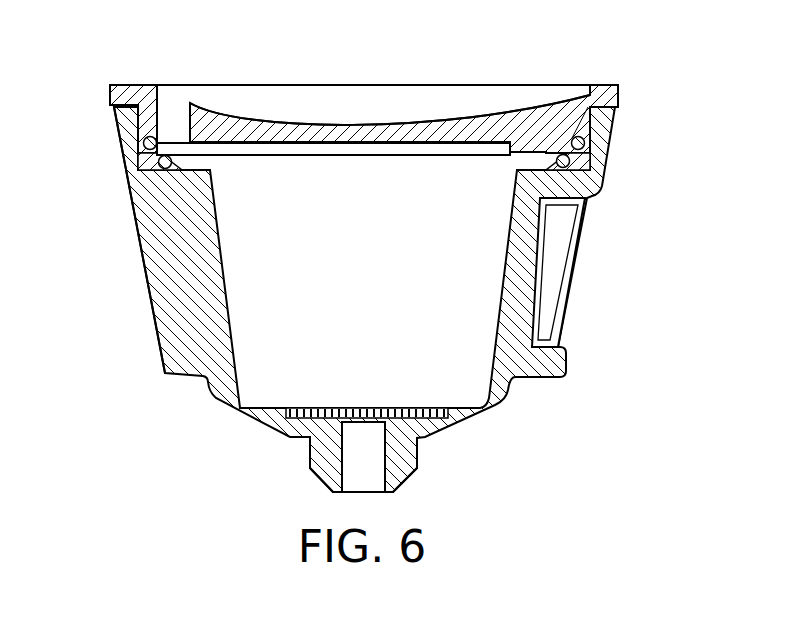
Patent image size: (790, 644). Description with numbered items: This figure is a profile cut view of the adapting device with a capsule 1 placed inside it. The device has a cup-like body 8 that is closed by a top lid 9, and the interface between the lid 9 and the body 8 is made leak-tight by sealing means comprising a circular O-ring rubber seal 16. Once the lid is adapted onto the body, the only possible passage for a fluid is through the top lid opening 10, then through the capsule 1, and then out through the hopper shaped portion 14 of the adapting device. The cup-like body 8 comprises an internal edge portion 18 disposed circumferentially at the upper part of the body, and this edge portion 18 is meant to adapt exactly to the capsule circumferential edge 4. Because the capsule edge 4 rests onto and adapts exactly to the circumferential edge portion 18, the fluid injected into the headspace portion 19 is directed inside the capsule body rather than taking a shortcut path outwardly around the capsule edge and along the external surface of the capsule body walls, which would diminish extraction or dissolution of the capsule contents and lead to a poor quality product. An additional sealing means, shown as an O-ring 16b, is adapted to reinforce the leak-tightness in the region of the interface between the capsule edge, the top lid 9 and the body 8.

The capsule 1 is at (370, 273).
The capsule circumferential edge 4 is at (359, 139).
The cup-like body 8 is at (152, 279).
The top lid 9 is at (442, 98).
The top lid opening 10 is at (173, 113).
The hopper shaped portion 14 is at (410, 455).
The O-ring rubber seal 16 is at (143, 143).
The O-ring 16b is at (603, 170).
The internal edge portion 18 is at (153, 174).
The headspace portion 19 is at (340, 148).